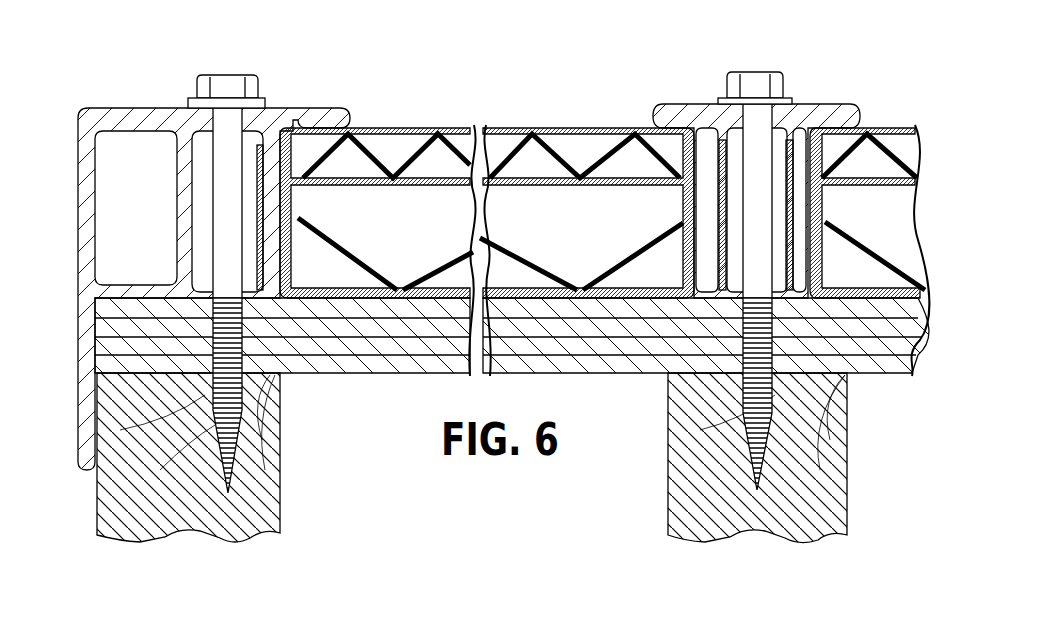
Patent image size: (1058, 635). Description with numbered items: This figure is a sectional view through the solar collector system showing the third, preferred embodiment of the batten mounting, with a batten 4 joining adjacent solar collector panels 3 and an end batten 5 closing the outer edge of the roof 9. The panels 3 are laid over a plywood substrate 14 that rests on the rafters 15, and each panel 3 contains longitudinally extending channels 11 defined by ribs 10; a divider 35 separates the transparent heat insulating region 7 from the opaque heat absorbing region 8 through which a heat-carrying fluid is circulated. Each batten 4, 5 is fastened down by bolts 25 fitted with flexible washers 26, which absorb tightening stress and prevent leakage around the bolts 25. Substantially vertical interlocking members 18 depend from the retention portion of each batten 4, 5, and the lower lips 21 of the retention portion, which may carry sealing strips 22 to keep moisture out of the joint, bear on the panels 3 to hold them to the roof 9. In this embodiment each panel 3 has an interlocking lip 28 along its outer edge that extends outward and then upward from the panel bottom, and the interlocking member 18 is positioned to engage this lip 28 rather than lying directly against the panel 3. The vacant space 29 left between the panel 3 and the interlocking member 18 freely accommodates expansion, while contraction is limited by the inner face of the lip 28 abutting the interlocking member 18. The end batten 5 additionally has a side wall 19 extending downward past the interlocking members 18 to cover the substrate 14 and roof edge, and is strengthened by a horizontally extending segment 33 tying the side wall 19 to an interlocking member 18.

The solar collector panel 3 is at (526, 230).
The batten 4 is at (701, 103).
The end batten 5 is at (100, 106).
The heat insulating region 7 is at (906, 147).
The heat absorbing region 8 is at (906, 225).
The roof 9 is at (94, 495).
The rib 10 is at (415, 152).
The channel 11 is at (393, 138).
The substrate 14 is at (645, 350).
The rafter 15 is at (280, 500).
The interlocking member 18 is at (176, 222).
The side wall 19 is at (85, 245).
The lower lip 21 is at (300, 112).
The sealing strip 22 is at (335, 127).
The bolt 25 is at (205, 75).
The flexible washer 26 is at (258, 99).
The interlocking lip 28 is at (250, 180).
The vacant space 29 is at (286, 212).
The horizontally extending segment 33 is at (150, 285).
The divider 35 is at (565, 188).